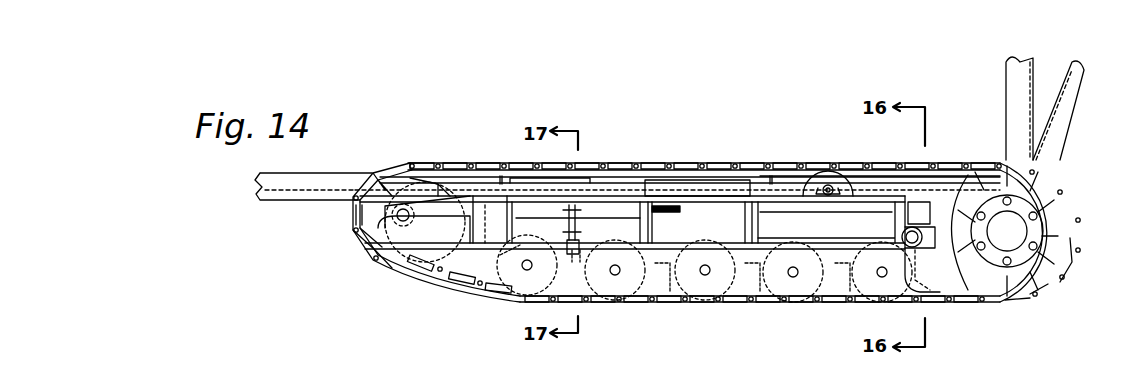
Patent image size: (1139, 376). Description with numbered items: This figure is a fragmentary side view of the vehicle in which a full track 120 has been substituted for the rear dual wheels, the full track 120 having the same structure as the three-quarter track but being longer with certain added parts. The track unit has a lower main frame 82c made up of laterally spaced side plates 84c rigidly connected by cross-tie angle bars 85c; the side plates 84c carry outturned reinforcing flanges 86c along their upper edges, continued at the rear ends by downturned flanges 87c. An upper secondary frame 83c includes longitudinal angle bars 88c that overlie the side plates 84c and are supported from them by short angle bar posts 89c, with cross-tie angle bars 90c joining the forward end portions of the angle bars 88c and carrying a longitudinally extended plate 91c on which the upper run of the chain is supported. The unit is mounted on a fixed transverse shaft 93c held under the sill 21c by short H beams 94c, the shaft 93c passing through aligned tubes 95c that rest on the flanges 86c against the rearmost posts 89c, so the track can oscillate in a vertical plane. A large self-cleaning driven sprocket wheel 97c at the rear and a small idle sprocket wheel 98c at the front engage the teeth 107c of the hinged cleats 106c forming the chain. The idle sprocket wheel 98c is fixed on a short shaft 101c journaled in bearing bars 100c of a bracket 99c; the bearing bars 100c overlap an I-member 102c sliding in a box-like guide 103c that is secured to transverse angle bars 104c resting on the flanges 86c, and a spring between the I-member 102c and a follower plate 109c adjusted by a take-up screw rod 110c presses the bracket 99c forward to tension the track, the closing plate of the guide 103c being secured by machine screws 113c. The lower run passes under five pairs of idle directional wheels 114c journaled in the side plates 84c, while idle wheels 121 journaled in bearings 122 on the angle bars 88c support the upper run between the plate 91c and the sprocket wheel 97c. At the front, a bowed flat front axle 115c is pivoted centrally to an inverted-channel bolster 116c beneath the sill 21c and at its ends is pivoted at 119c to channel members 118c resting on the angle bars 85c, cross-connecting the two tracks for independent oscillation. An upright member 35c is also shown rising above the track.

The sill 21c is at (291, 190).
The idle sprocket wheel 98c is at (365, 218).
The short shaft 101c is at (404, 210).
The bearing bars 100c is at (424, 222).
The I-member 102c is at (483, 212).
The bracket 99c is at (482, 200).
The cross-tie angle bars 90c is at (547, 172).
The longitudinally extended plate 91c is at (589, 181).
The machine screws 113c is at (657, 215).
The box-like guide 103c is at (580, 222).
The bolster 116c is at (580, 212).
The transverse angle bars 104c is at (615, 226).
The take-up screw rod 110c is at (660, 208).
The follower plate 109c is at (702, 222).
The longitudinal angle bars 88c is at (772, 198).
The angle bar posts 89c is at (896, 215).
The reinforcing flanges 86c is at (850, 250).
The secondary frame 83c is at (790, 182).
The idle wheels 121 is at (825, 176).
The bearings 122 is at (834, 190).
The H beams 94c is at (916, 206).
The tubes 95c is at (922, 230).
The fixed transverse shaft 93c is at (922, 238).
The downturned flanges 87c is at (928, 271).
The channel members 118c is at (527, 265).
The pivot 119c is at (540, 265).
The front axle 115c is at (575, 242).
The idle directional wheels 114c is at (627, 280).
The cross-tie angle bars 85c is at (680, 298).
The main frame 82c is at (852, 296).
The side plates 84c is at (903, 290).
The driven sprocket wheel 97c is at (1060, 220).
The hinged cleats 106c is at (1072, 252).
The full track 120 is at (1064, 300).
The teeth 107c is at (1028, 300).
The upright stake 35c is at (1045, 113).